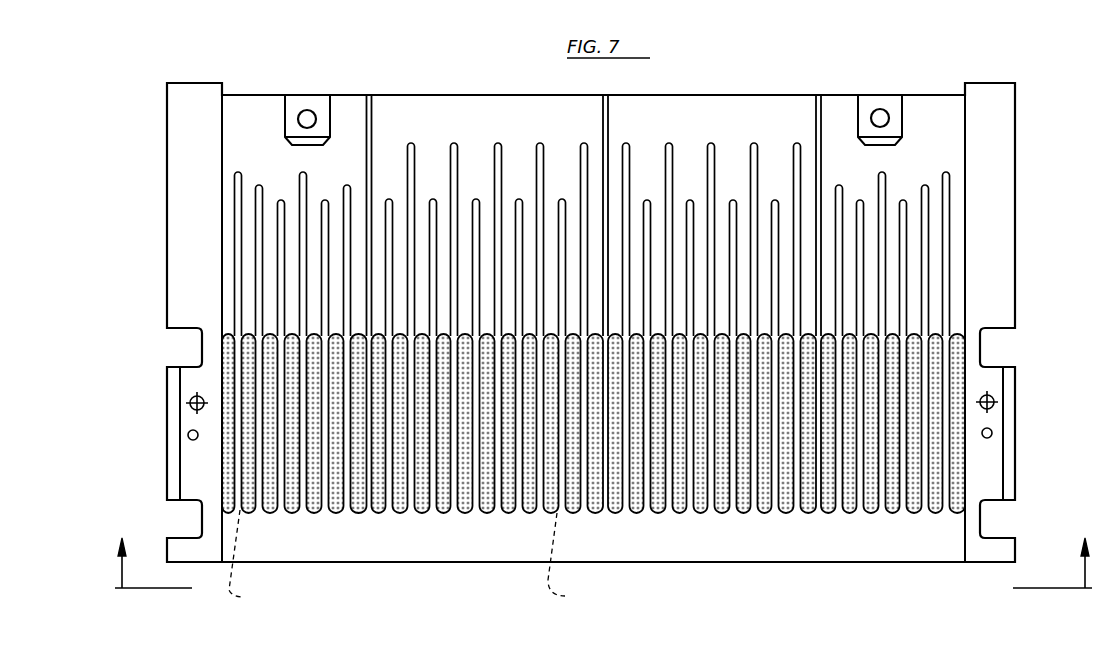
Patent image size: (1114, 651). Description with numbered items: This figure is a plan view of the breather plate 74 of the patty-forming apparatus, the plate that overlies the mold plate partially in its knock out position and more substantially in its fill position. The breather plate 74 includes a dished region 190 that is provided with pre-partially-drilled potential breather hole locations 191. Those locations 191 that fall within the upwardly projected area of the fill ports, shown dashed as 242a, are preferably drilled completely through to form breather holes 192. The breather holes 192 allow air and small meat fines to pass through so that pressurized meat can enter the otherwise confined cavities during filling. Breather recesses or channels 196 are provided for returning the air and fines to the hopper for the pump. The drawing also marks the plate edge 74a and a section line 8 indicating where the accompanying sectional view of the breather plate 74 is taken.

The breather plate 74 is at (1017, 288).
The bottom edge of plate 74a is at (1000, 565).
The dished region 190 is at (938, 332).
The potential breather hole locations 191 is at (657, 485).
The breather holes 192 is at (397, 493).
The breather recesses or channels 196 is at (742, 188).
The upwardly projected area of the fill ports 242a is at (421, 559).
The section line 8- 8 is at (603, 550).